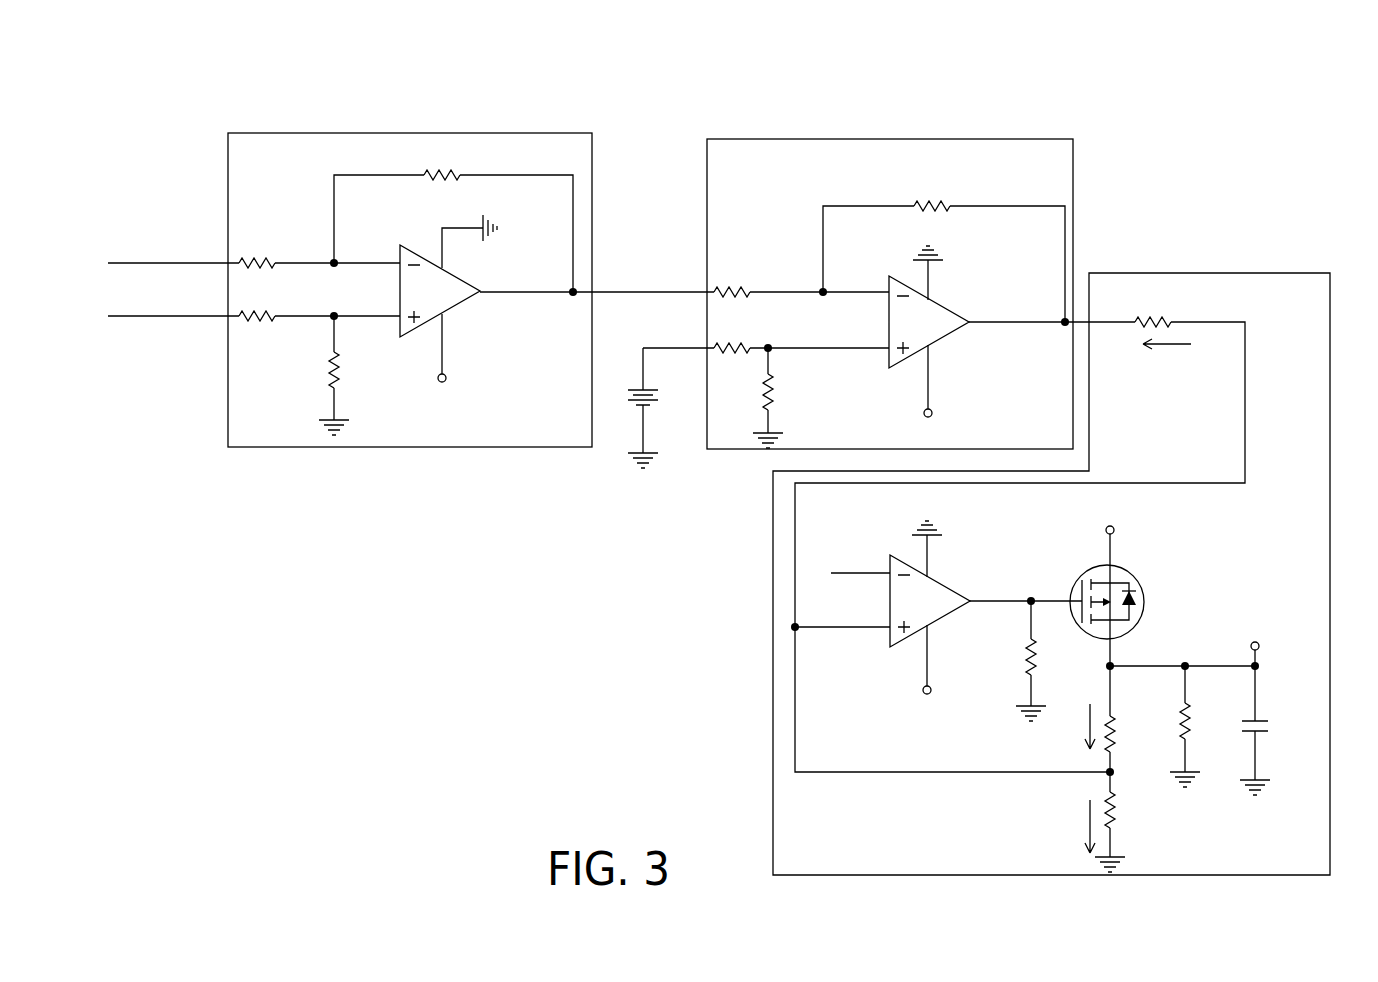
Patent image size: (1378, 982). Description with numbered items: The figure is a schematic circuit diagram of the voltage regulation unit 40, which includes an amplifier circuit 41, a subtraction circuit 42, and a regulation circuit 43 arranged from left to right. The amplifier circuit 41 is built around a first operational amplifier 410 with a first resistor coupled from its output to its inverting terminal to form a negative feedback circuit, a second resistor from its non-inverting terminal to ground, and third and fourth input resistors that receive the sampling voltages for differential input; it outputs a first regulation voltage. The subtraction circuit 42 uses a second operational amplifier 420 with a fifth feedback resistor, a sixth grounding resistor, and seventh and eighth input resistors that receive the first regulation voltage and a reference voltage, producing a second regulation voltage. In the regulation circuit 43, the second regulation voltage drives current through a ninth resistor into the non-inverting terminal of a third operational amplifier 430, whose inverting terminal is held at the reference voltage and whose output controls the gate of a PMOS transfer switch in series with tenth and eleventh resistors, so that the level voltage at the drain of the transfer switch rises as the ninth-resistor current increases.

The voltage regulation unit 40 is at (1231, 136).
The amplifier circuit 41 is at (587, 133).
The subtraction circuit 42 is at (1030, 139).
The regulation circuit 43 is at (1286, 273).
The first operational amplifier 410 is at (422, 255).
The second operational amplifier 420 is at (909, 283).
The third operational amplifier 430 is at (906, 562).